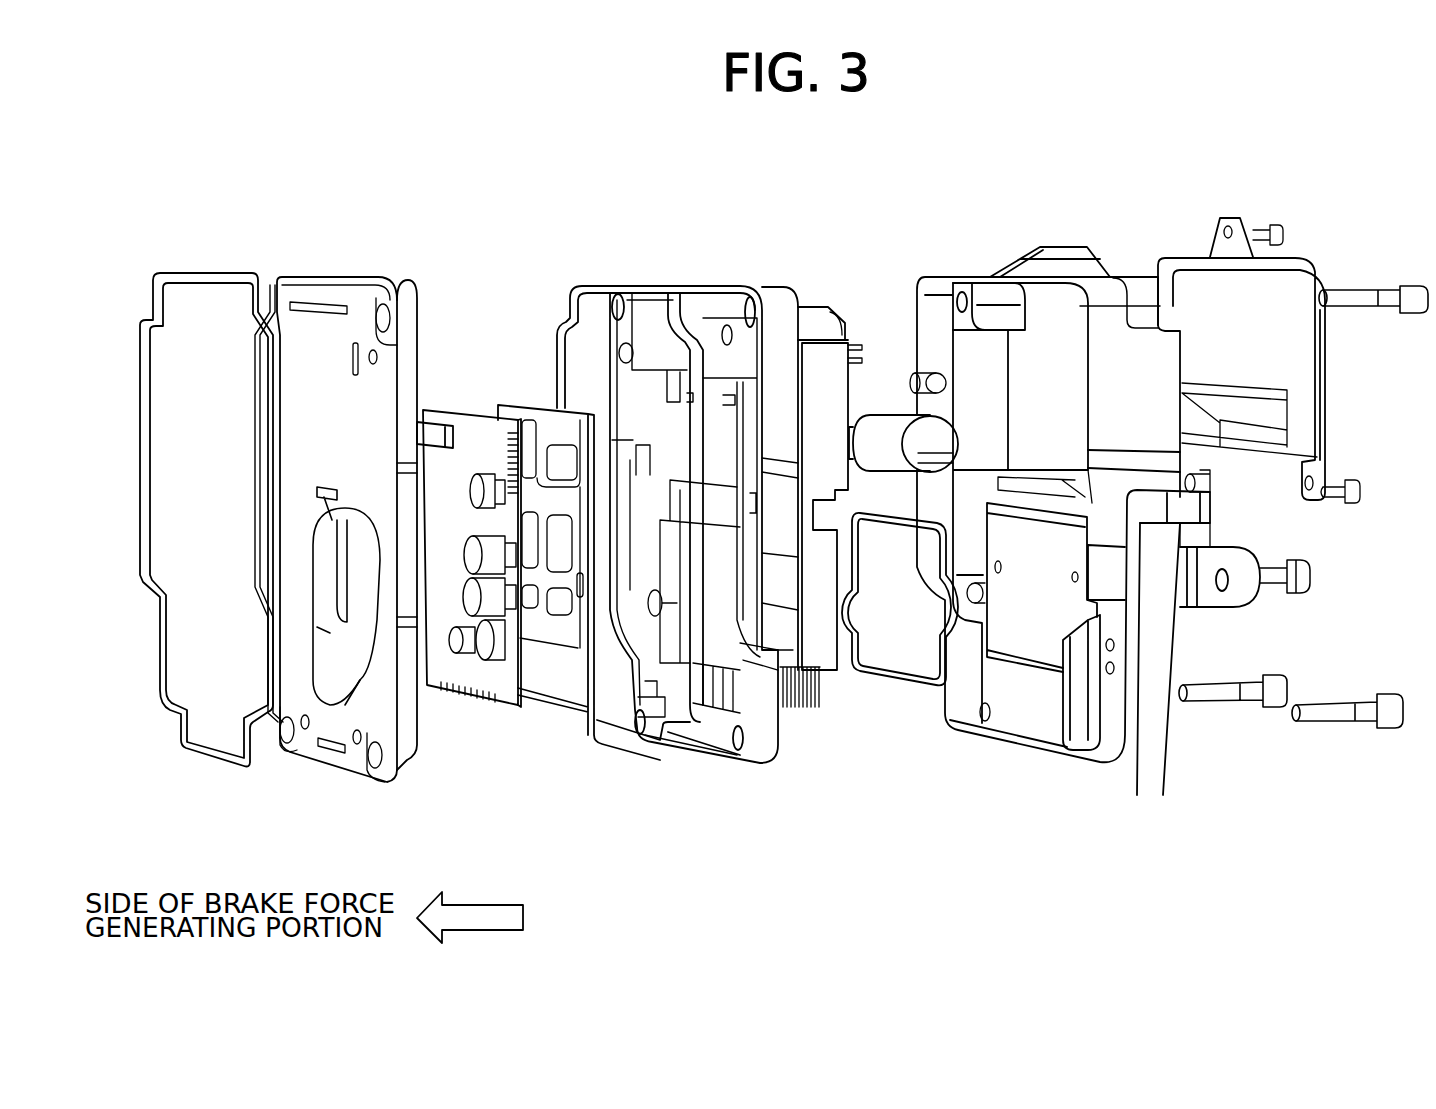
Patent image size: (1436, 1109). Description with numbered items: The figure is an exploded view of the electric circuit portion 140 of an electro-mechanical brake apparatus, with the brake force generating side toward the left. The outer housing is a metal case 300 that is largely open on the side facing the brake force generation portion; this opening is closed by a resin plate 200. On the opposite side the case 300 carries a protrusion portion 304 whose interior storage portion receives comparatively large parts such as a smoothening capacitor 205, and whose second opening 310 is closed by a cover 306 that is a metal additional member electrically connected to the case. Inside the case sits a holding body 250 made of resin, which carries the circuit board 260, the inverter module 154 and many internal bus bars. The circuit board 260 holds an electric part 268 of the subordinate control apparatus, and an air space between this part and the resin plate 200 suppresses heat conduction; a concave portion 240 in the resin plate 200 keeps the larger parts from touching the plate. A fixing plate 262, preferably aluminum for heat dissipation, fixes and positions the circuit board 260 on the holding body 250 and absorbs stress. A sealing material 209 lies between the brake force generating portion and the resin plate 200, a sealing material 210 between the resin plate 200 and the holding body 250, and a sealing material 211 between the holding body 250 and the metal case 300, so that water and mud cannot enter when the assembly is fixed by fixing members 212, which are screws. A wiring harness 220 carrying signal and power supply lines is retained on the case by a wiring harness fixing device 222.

The electric circuit portion 140 is at (750, 194).
The inverter module 154 is at (822, 687).
The resin plate 200 is at (333, 755).
The smoothening capacitor 205 is at (892, 420).
The sealing material 209 is at (183, 752).
The sealing material 210 is at (654, 567).
The sealing material 211 is at (903, 690).
The fixing member 212 is at (1348, 298).
The wiring harness 220 is at (1095, 494).
The wiring harness fixing device 222 is at (1238, 573).
The concave portion 240 is at (337, 680).
The holding body 250 is at (748, 770).
The circuit board 260 is at (472, 567).
The fixing plate 262 is at (571, 707).
The electric part 268 is at (462, 545).
The metal case 300 is at (955, 277).
The protrusion portion 304 is at (1115, 332).
The cover 306 is at (1326, 380).
The second opening 310 is at (1045, 320).